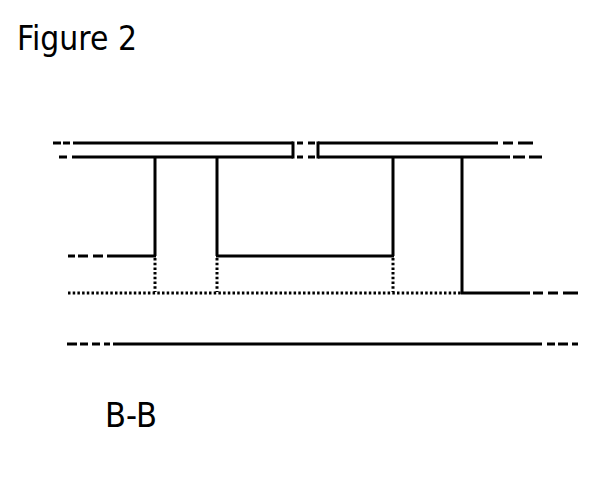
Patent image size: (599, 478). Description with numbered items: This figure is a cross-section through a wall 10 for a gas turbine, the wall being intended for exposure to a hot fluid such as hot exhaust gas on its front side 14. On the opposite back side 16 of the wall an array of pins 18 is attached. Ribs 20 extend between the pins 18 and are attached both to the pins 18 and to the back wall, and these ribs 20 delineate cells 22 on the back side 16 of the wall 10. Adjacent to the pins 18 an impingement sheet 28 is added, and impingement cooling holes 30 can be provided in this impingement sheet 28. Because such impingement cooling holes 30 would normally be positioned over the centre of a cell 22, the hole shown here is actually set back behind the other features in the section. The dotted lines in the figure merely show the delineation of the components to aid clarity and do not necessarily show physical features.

The wall 10 is at (472, 96).
The front side 14 is at (255, 345).
The back side 16 is at (498, 295).
The pins 18 is at (192, 180).
The ribs 20 is at (123, 272).
The cells 22 is at (129, 228).
The impingement sheet 28 is at (247, 152).
The impingement cooling holes 30 is at (305, 143).